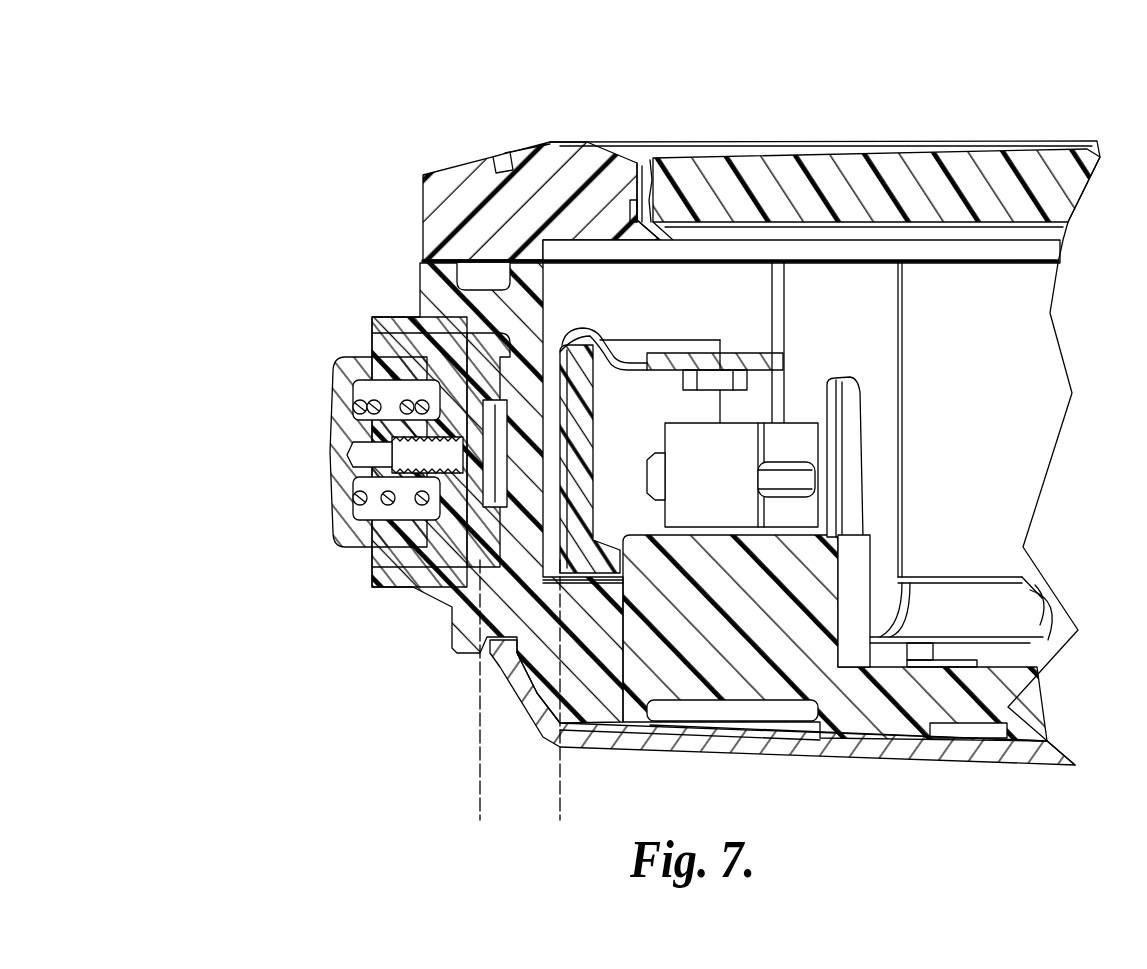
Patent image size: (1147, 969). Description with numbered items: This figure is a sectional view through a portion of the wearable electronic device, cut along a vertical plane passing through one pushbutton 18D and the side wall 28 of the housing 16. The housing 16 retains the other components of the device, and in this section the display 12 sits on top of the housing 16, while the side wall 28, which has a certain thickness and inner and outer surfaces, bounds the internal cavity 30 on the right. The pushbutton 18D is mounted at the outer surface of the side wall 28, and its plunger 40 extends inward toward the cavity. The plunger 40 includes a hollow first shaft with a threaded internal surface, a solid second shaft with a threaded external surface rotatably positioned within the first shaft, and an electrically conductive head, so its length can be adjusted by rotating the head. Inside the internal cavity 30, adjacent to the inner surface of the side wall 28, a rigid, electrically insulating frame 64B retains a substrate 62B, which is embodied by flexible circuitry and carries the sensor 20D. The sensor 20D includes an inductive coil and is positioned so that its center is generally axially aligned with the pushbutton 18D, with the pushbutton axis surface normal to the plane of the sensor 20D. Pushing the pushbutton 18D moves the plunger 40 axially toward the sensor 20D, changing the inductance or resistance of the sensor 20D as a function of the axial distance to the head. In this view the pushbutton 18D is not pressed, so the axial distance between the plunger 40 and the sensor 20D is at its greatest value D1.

The display 12 is at (763, 140).
The housing 16 is at (437, 150).
The side wall 28 is at (432, 290).
The internal cavity 30 is at (1018, 354).
The pushbutton 18D is at (310, 438).
The plunger 40 is at (460, 484).
The sensor 20D is at (553, 480).
The substrate 62B is at (563, 340).
The frame 64B is at (580, 433).
The greatest axial distance D1 is at (558, 805).